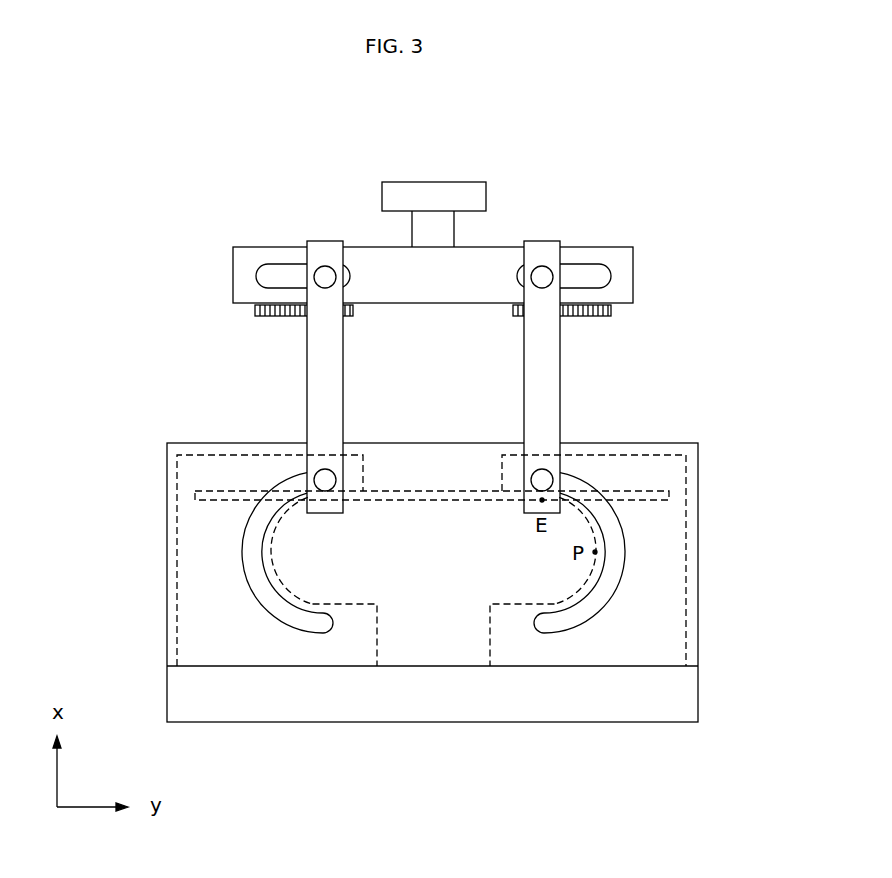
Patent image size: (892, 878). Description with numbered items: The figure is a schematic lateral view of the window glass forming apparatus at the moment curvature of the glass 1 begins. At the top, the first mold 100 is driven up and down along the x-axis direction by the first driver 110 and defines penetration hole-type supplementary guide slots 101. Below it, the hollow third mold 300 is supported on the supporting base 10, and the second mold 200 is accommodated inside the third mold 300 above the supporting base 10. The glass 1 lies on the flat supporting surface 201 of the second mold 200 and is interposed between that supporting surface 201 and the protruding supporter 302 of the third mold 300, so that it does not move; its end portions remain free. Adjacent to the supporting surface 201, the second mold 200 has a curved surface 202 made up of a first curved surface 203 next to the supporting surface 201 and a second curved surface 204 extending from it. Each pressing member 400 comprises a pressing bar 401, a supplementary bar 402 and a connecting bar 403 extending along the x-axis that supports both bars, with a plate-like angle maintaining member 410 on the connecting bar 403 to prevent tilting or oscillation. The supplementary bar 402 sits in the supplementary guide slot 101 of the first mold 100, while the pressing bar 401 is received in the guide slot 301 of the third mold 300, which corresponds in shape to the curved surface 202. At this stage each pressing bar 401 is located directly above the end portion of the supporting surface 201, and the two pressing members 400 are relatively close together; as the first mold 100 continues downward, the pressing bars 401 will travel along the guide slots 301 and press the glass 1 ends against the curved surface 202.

The glass 1 is at (195, 497).
The supporting base 10 is at (177, 697).
The first mold 100 is at (633, 272).
The supplementary guide slot 101 is at (590, 276).
The first driver 110 is at (432, 190).
The second mold 200 is at (363, 611).
The supporting surface 201 is at (560, 470).
The curved surface 202 is at (778, 517).
The first curved surface 203 is at (597, 522).
The second curved surface 204 is at (583, 585).
The third mold 300 is at (167, 618).
The guide slot 301 is at (250, 557).
The protruding supporter 302 is at (483, 497).
The pressing member 400 is at (155, 425).
The pressing bar 401 is at (318, 476).
The supplementary bar 402 is at (316, 277).
The connecting bar 403 is at (322, 345).
The angle maintaining member 410 is at (608, 312).